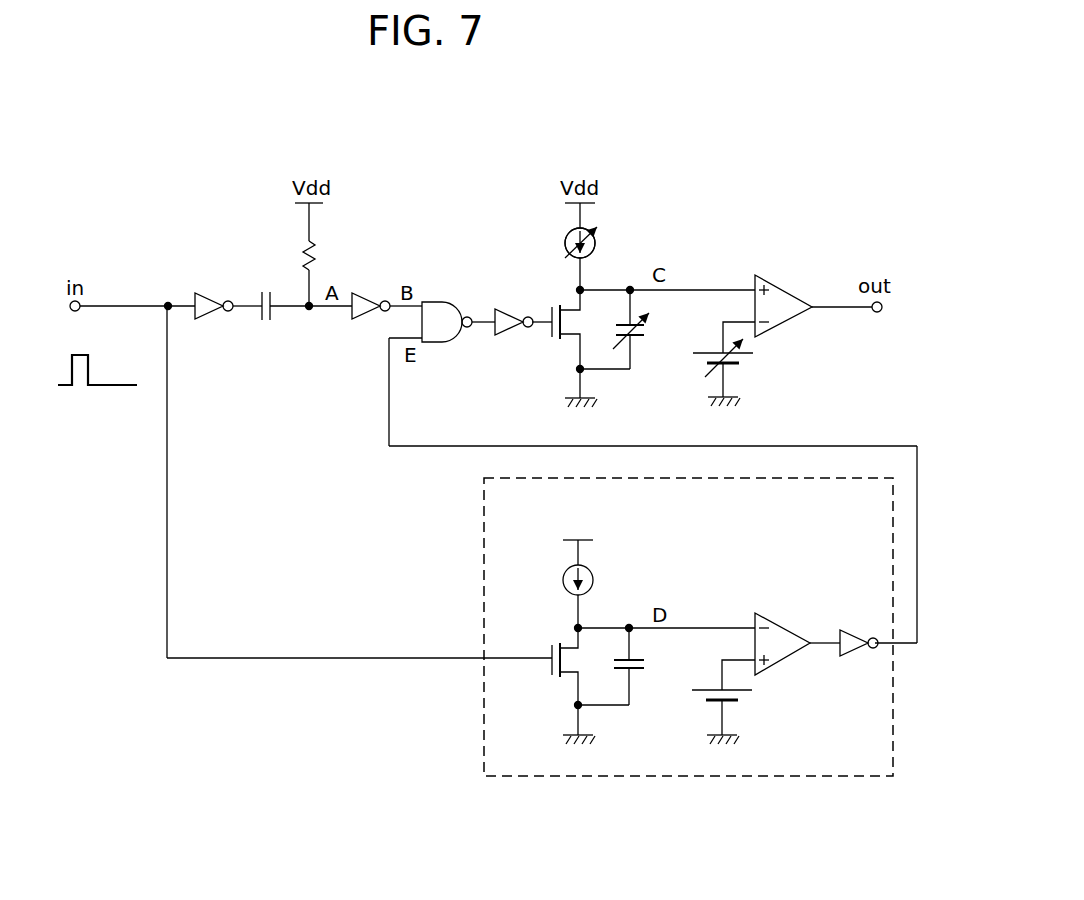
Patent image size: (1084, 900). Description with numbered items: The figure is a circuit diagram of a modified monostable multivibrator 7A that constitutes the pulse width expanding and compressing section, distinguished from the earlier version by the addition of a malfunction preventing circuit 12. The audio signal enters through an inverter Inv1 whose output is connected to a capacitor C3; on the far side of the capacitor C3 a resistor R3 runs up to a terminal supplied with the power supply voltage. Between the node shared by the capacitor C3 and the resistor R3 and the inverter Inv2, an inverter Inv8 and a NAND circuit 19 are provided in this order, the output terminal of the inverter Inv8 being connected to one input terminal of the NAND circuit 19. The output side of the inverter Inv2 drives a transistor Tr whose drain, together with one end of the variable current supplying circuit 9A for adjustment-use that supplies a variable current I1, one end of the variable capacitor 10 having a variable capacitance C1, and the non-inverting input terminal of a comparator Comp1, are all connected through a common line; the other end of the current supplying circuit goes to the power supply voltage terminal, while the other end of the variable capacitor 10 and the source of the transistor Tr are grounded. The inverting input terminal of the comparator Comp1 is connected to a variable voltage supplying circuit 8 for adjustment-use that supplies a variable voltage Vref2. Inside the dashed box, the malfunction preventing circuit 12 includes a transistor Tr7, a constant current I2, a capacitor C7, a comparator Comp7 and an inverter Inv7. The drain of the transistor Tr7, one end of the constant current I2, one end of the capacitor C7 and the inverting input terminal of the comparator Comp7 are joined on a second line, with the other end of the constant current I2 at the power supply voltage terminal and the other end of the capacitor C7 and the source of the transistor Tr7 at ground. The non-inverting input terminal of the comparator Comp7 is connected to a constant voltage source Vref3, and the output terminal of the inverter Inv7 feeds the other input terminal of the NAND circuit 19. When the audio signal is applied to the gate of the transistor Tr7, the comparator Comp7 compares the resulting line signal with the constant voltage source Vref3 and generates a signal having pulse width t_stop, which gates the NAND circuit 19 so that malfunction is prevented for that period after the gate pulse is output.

The monostable multivibrator 7A is at (712, 155).
The variable current supplying circuit for adjustment-use 9A is at (557, 240).
The variable current I1 is at (597, 243).
The resistor R3 is at (316, 246).
The inverter Inv1 is at (208, 322).
The capacitor C3 is at (267, 324).
The inverter Inv8 is at (365, 322).
The NAND circuit 19 is at (432, 344).
The inverter Inv2 is at (510, 336).
The transistor Tr is at (557, 306).
The variable capacitance C1 is at (650, 333).
The variable capacitor 10 is at (640, 352).
The variable voltage supplying circuit for adjustment-use 8 is at (696, 366).
The variable voltage Vref2 is at (753, 356).
The comparator Comp1 is at (775, 276).
The malfunction preventing circuit 12 is at (481, 500).
The constant current I2 is at (596, 580).
The transistor Tr7 is at (558, 645).
The capacitor C7 is at (648, 670).
The comparator Comp7 is at (773, 613).
The inverter Inv7 is at (851, 628).
The constant voltage source Vref3 is at (748, 695).